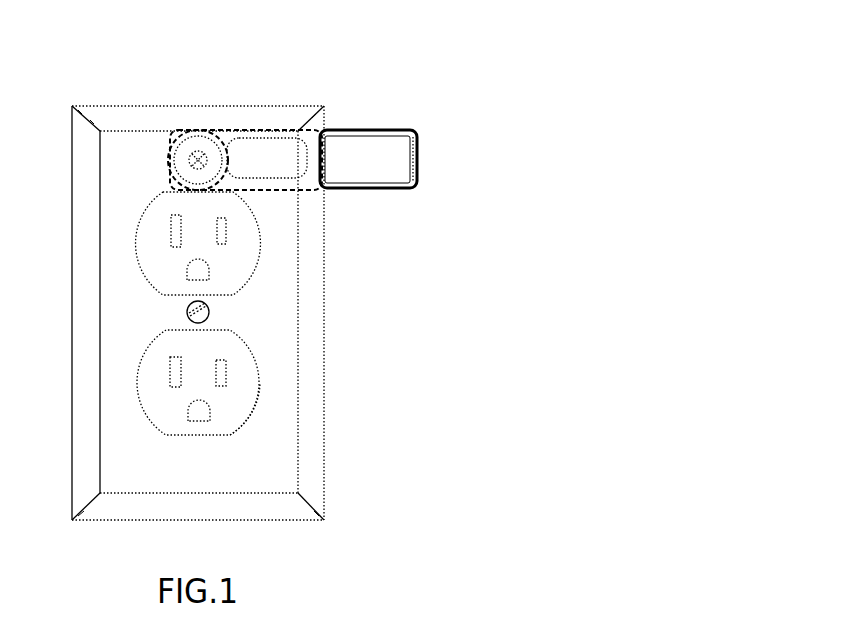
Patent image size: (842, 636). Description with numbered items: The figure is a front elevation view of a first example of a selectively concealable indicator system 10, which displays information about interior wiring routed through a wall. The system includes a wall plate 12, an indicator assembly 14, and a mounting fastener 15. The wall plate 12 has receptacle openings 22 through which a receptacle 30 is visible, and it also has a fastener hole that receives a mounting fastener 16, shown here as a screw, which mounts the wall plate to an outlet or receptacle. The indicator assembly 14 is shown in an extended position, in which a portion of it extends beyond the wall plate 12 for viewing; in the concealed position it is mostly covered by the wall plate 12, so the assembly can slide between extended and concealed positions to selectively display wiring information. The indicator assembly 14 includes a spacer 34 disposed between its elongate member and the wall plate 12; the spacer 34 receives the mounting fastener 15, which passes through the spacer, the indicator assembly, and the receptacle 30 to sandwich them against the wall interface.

The selectively concealable indicator system 10 is at (403, 47).
The wall plate 12 is at (290, 471).
The indicator assembly 14 is at (412, 120).
The mounting fastener 15 is at (208, 160).
The mounting fastener 16 is at (210, 311).
The receptacle openings 22 is at (164, 436).
The receptacle 30 is at (242, 412).
The spacer 34 is at (185, 134).